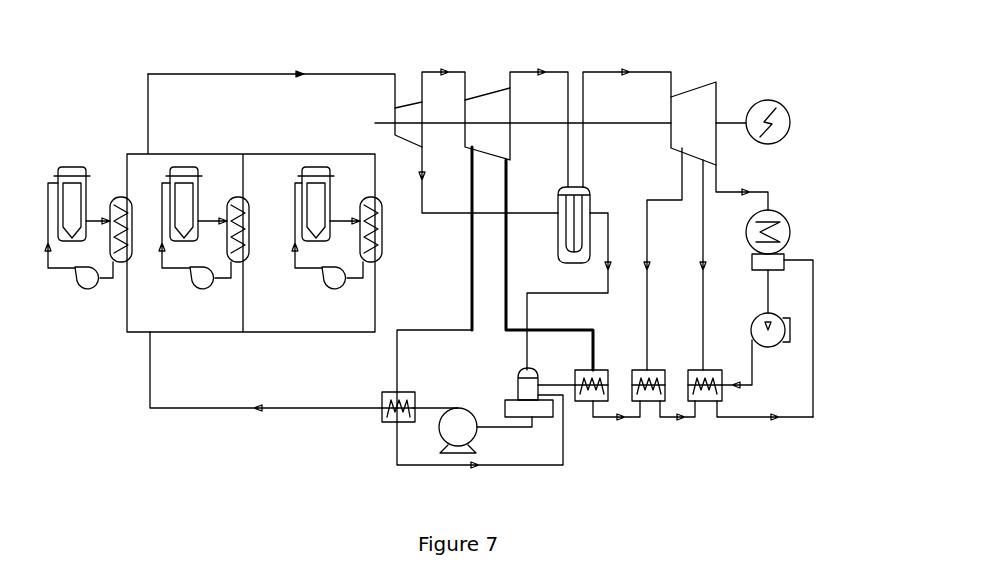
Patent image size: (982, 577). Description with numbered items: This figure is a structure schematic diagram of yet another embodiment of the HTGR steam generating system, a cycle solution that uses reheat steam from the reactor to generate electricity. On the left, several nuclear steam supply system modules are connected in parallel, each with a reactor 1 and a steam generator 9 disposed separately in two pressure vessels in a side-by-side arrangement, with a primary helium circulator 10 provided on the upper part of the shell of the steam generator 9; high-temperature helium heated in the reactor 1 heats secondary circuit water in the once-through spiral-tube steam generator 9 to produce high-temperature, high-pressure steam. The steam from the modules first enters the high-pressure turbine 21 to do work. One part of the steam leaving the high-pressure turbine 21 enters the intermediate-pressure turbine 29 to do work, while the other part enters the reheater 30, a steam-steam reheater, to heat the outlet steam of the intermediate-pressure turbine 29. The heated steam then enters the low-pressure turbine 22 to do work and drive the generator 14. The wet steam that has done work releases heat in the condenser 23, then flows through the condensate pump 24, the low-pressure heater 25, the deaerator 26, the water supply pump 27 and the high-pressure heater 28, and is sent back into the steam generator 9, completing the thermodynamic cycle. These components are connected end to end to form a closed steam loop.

The reactor 1 is at (70, 167).
The steam generator 9 is at (120, 197).
The primary helium circulator 10 is at (90, 288).
The high-pressure turbine 21 is at (420, 103).
The intermediate-pressure turbine 29 is at (487, 95).
The low-pressure turbine 22 is at (695, 90).
The generator 14 is at (766, 100).
The reheater 30 is at (590, 201).
The condenser 23 is at (787, 220).
The condensate pump 24 is at (765, 318).
The low-pressure heater 25 is at (705, 370).
The deaerator 26 is at (518, 378).
The water supply pump 27 is at (460, 408).
The high-pressure heater 28 is at (383, 417).